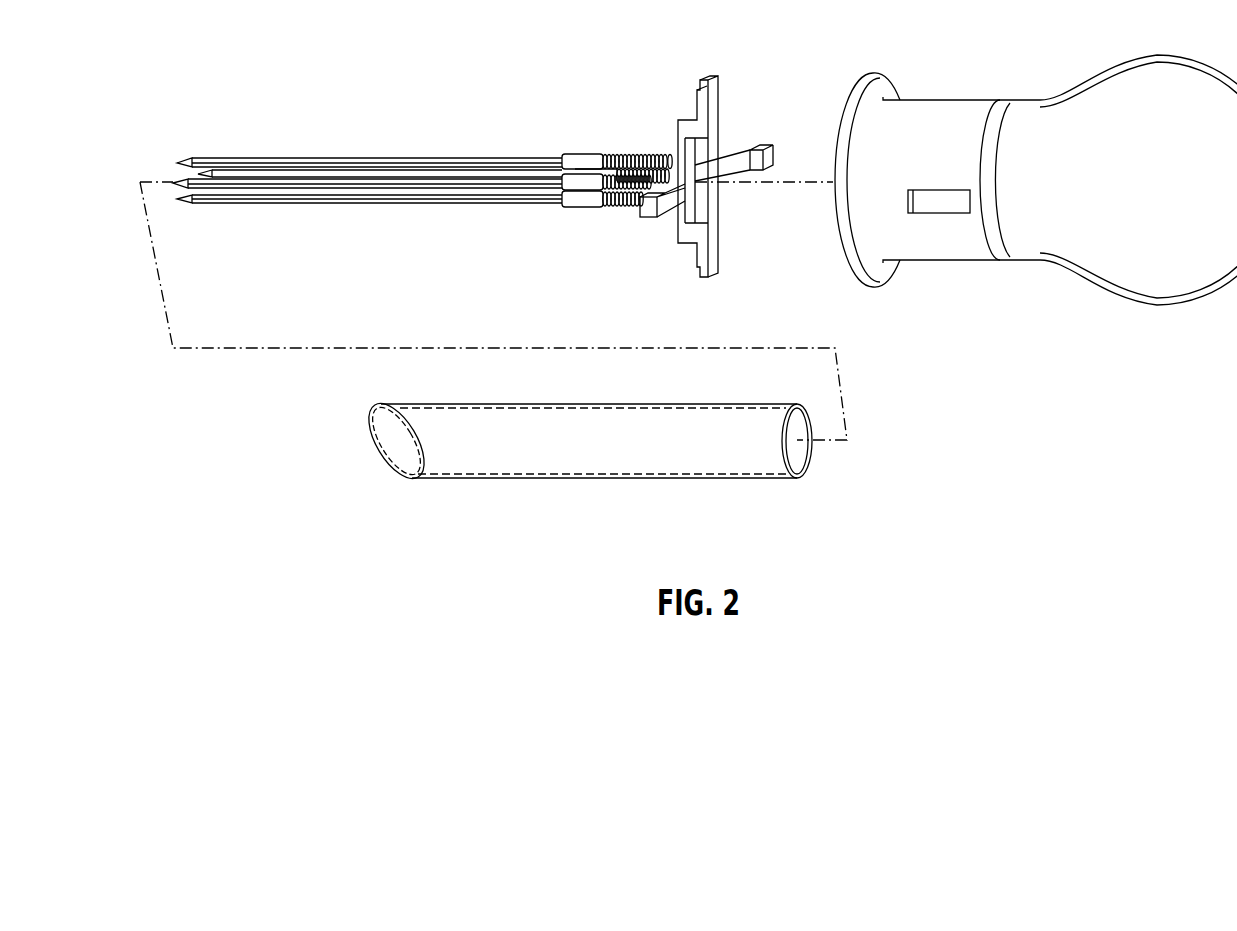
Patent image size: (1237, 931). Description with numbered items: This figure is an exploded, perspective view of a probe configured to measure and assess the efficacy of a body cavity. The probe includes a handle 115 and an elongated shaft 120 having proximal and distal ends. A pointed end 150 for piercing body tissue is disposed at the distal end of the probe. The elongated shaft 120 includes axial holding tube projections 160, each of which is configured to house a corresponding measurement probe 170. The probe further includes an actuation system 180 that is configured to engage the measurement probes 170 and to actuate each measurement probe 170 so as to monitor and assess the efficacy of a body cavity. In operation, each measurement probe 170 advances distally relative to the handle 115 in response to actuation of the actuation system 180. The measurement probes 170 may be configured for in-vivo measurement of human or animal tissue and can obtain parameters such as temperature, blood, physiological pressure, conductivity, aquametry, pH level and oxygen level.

The handle 115 is at (927, 100).
The elongated shaft 120 is at (585, 403).
The pointed end 150 is at (370, 437).
The axial holding tube projections 160 is at (218, 173).
The measurement probe 170 is at (420, 175).
The actuation system 180 is at (627, 138).